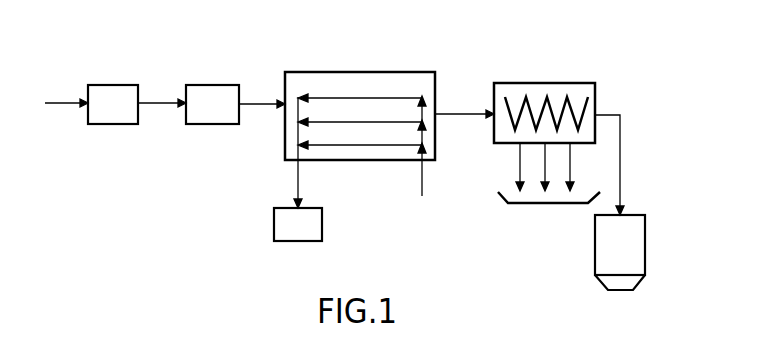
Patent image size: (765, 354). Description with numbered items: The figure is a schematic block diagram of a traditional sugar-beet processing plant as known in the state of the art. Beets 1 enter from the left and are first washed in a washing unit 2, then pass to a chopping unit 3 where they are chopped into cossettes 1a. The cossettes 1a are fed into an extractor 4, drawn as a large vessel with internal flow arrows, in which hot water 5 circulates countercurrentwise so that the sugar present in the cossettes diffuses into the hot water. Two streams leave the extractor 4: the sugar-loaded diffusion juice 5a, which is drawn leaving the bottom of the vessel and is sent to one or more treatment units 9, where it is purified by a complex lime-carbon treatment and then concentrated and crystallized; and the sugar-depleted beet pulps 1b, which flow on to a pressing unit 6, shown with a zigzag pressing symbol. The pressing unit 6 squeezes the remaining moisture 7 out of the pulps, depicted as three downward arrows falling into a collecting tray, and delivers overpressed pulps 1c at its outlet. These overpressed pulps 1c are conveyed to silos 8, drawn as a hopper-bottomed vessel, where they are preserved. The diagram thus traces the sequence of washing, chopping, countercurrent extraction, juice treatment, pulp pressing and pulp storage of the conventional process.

The beets 1 is at (62, 103).
The cossettes 1a is at (259, 104).
The beet pulps 1b is at (460, 114).
The overpressed pulps 1c is at (622, 180).
The washing unit 2 is at (106, 116).
The chopping unit 3 is at (205, 116).
The extractor 4 is at (356, 72).
The hot water 5 is at (424, 180).
The diffusion juice 5a is at (300, 180).
The pressing unit 6 is at (541, 83).
The remaining moisture 7 is at (519, 164).
The silos 8 is at (613, 256).
The treatment units 9 is at (291, 237).